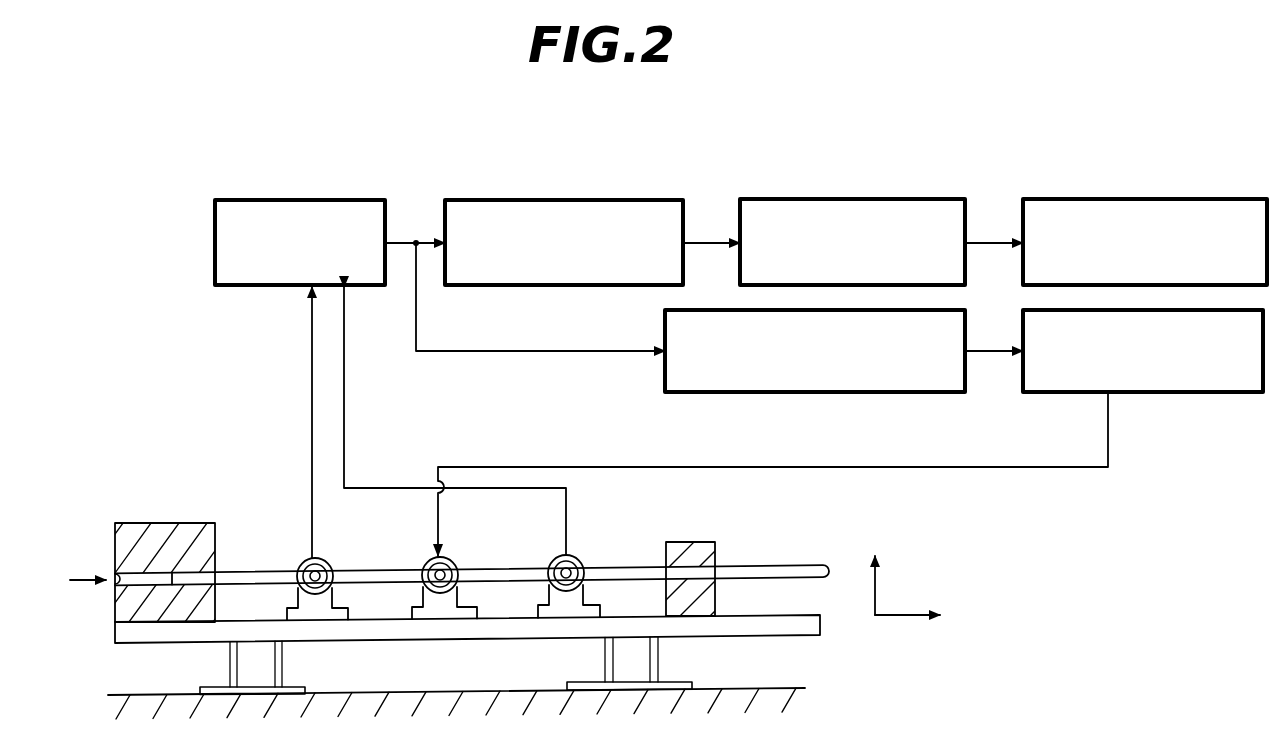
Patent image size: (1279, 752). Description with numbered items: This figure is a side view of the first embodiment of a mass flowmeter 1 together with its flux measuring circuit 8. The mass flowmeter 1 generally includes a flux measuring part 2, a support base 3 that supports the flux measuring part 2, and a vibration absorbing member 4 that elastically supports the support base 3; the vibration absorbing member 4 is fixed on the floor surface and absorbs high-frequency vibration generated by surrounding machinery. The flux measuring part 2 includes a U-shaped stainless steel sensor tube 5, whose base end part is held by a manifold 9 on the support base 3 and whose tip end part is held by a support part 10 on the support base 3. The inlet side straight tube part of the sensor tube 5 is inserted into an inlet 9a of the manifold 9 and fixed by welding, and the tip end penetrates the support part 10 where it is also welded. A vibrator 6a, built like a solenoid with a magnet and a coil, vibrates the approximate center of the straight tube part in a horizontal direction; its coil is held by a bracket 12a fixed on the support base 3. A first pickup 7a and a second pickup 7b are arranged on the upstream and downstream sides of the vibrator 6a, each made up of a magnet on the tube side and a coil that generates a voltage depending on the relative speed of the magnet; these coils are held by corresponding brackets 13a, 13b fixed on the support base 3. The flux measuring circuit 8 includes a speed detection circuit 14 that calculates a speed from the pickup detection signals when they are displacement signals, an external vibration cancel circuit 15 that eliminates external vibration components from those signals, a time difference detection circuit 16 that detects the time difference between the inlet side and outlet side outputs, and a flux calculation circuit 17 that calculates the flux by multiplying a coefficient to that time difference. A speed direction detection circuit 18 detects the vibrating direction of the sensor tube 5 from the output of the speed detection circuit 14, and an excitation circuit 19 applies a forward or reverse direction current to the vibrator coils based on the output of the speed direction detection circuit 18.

The mass flowmeter 1 is at (751, 107).
The flux measuring part 2 is at (770, 519).
The support base 3 is at (793, 636).
The vibration absorbing member 4 is at (228, 662).
The sensor tube 5 is at (762, 565).
The vibrator 6a is at (453, 558).
The first pickup 7a is at (323, 558).
The second pickup 7b is at (575, 555).
The flux measuring circuit 8 is at (779, 166).
The manifold 9 is at (166, 523).
The inlet 9a is at (113, 579).
The support part 10 is at (694, 541).
The bracket 12a is at (445, 610).
The bracket 13a is at (316, 610).
The bracket 13b is at (567, 612).
The speed detection circuit 14 is at (265, 200).
The external vibration cancel circuit 15 is at (528, 200).
The time difference detection circuit 16 is at (820, 199).
The flux calculation circuit 17 is at (1113, 199).
The speed direction detection circuit 18 is at (803, 392).
The excitation circuit 19 is at (1155, 392).